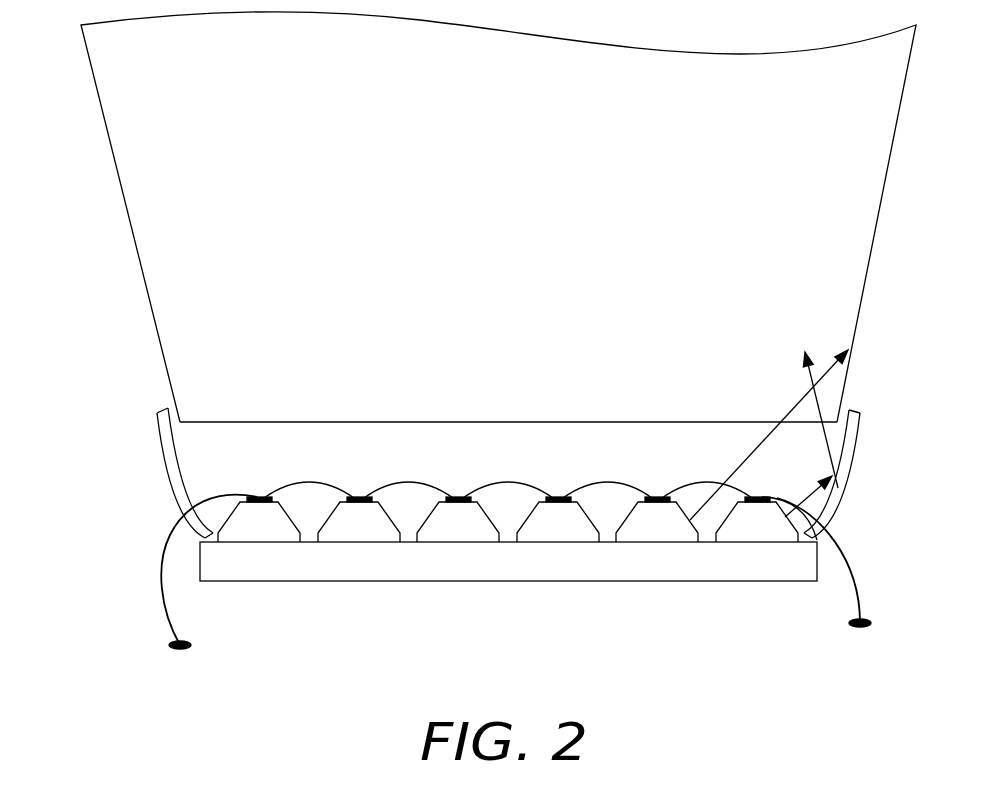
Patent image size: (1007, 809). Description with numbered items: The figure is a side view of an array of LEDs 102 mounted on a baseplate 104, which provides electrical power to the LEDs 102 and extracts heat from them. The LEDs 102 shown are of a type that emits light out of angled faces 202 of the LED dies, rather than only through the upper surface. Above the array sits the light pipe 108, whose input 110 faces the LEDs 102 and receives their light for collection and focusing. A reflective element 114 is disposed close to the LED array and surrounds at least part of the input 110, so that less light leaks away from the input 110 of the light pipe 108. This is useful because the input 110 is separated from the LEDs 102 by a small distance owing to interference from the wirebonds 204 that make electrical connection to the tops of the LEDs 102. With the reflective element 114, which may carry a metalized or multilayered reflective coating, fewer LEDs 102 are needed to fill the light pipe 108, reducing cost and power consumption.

The LEDs 102 is at (508, 552).
The baseplate 104 is at (620, 581).
The light pipe 108 is at (122, 187).
The input 110 is at (212, 424).
The reflective element 114 is at (165, 462).
The angled faces 202 is at (327, 513).
The wirebonds 204 is at (503, 482).